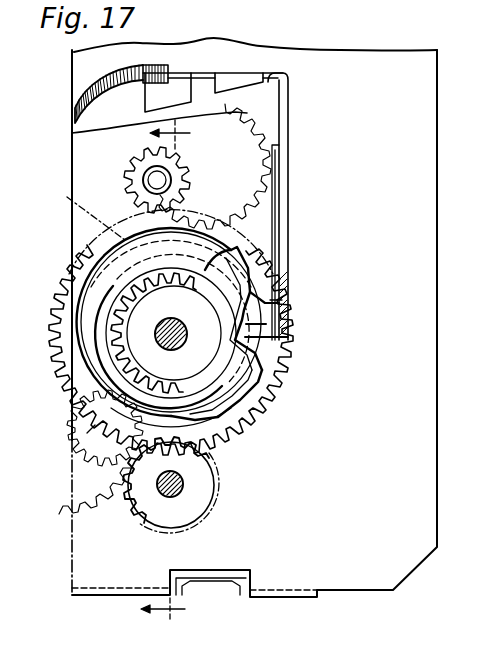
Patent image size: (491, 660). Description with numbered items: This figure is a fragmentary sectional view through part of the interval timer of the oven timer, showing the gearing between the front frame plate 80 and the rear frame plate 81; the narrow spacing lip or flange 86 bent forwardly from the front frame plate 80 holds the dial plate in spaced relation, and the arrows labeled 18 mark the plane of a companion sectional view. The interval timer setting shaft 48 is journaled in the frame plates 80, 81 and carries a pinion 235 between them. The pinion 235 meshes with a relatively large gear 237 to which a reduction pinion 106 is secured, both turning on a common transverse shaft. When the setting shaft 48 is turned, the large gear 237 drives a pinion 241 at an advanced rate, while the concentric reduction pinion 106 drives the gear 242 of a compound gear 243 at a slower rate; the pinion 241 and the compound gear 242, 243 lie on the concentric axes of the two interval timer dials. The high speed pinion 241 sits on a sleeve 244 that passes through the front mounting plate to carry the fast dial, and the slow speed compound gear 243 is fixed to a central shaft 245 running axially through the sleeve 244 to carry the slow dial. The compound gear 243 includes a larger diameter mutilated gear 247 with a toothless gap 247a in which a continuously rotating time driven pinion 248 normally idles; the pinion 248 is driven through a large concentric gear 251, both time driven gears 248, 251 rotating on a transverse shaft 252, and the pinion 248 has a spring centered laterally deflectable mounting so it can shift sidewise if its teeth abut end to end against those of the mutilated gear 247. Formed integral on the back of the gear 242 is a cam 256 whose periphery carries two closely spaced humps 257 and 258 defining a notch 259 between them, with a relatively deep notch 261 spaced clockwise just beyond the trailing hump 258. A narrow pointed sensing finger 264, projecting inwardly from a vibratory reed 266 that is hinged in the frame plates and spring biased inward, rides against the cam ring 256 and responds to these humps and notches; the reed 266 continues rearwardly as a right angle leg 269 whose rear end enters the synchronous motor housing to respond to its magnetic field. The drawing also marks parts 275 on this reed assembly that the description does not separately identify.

The section line 18 is at (179, 369).
The interval timer setting shaft 48 is at (187, 483).
The front frame plate 80 is at (255, 26).
The rear frame plate 81 is at (430, 155).
The spacing lip or flange 86 is at (135, 592).
The reduction pinion 106 is at (87, 433).
The pinion 235 is at (148, 497).
The relatively large gear 237 is at (93, 487).
The pinion 241 is at (218, 412).
The gear 242 is at (105, 431).
The compound gear 243 is at (250, 398).
The sleeve 244 is at (170, 345).
The central shaft 245 is at (180, 343).
The mutilated gear 247 is at (262, 208).
The toothless gap 247a is at (74, 209).
The time driven pinion 248 is at (190, 182).
The large concentric gear 251 is at (240, 157).
The transverse shaft 252 is at (157, 180).
The cam 256 is at (232, 282).
The hump 257 is at (250, 280).
The hump 258 is at (283, 283).
The notch 259 is at (277, 275).
The deep notch 261 is at (285, 356).
The sensing finger 264 is at (253, 333).
The vibratory reed 266 is at (288, 213).
The right angle leg 269 is at (287, 107).
The tab 275 is at (273, 76).